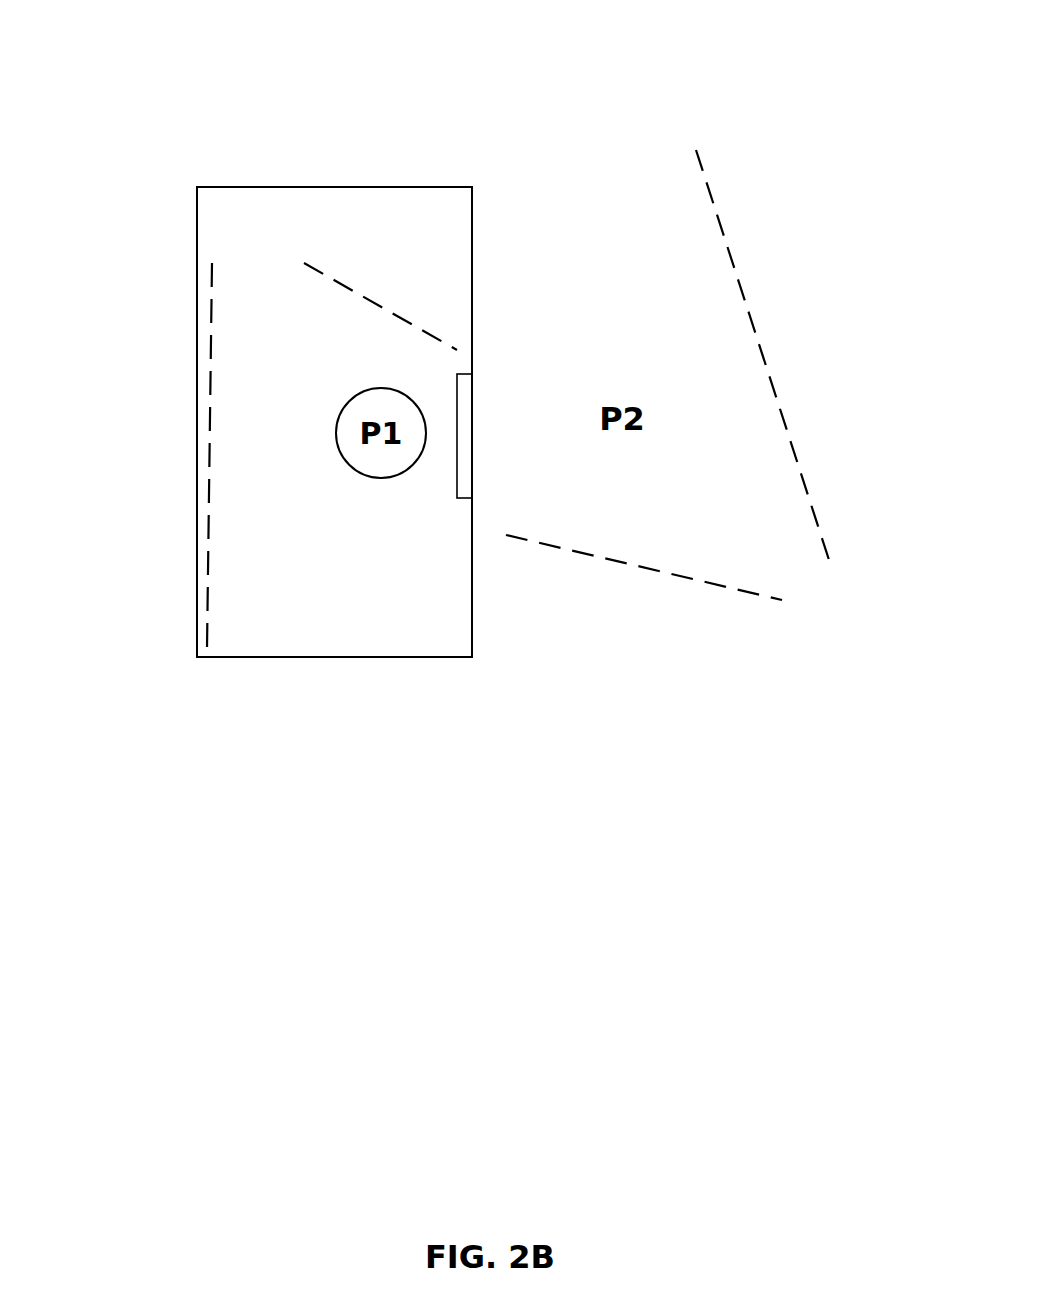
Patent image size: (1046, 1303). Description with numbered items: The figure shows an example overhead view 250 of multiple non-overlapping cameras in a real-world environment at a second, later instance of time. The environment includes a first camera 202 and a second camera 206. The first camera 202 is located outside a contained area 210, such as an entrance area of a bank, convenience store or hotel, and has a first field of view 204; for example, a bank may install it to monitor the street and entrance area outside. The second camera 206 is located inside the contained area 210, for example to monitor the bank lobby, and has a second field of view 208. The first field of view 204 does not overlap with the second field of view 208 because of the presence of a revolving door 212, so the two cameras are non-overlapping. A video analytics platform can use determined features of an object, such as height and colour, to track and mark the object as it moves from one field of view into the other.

The overhead view 250 is at (146, 36).
The first camera 202 is at (852, 600).
The first field of view 204 is at (717, 300).
The second camera 206 is at (232, 261).
The second field of view 208 is at (232, 412).
The contained area 210 is at (472, 205).
The revolving door 212 is at (472, 390).